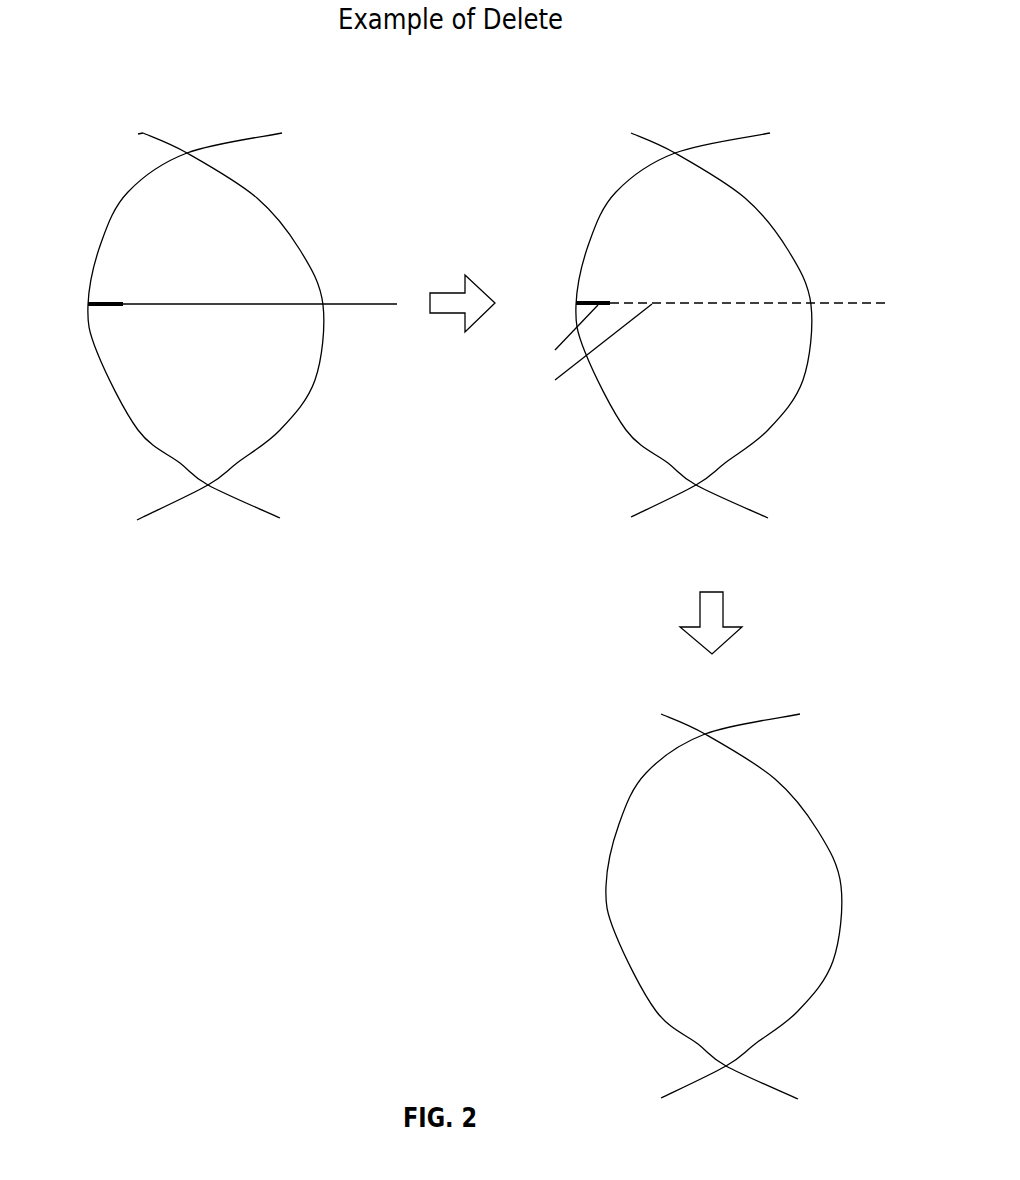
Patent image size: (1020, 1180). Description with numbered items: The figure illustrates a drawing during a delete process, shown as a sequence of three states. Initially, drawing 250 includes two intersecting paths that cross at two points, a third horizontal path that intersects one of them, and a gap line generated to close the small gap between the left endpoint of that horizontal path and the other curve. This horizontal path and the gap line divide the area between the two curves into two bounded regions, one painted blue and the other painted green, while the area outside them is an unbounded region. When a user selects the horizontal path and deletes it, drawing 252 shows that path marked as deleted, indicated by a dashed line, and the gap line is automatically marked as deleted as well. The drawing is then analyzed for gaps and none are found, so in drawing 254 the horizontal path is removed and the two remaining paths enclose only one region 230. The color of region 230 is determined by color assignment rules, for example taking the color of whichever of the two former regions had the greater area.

The region 230 is at (737, 869).
The drawing 250 is at (287, 109).
The drawing 252 is at (775, 109).
The drawing 254 is at (805, 699).